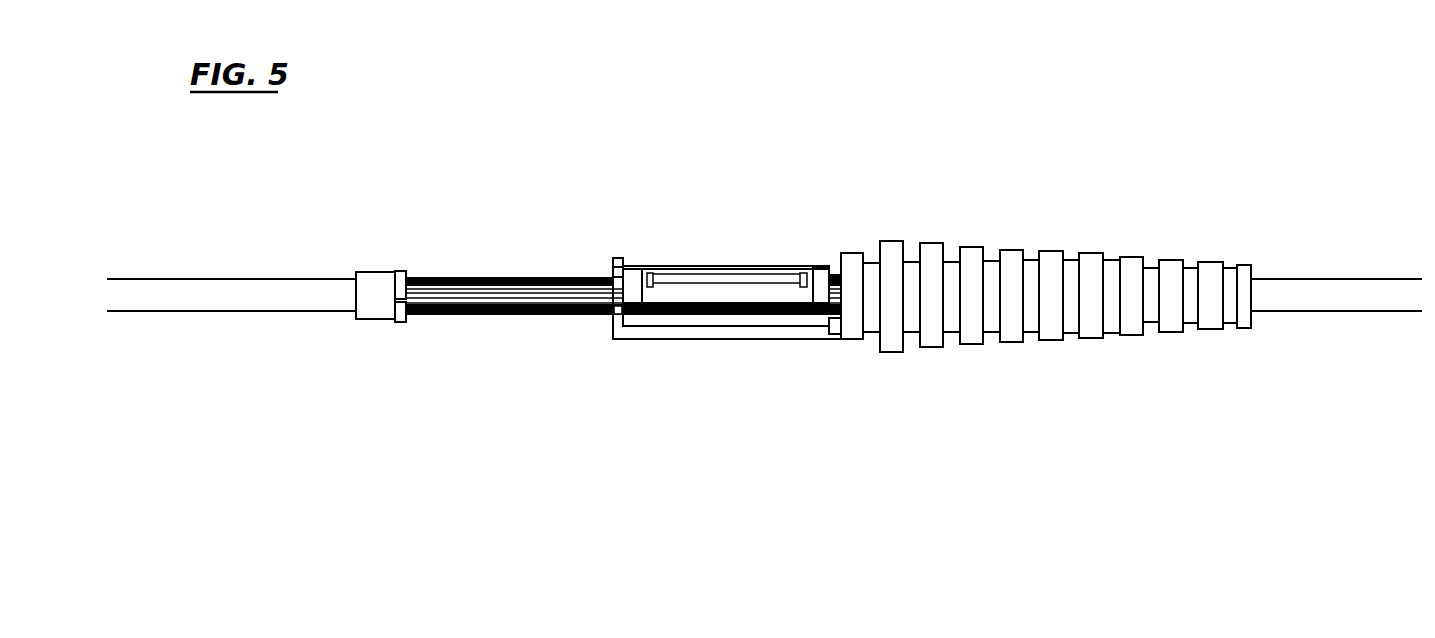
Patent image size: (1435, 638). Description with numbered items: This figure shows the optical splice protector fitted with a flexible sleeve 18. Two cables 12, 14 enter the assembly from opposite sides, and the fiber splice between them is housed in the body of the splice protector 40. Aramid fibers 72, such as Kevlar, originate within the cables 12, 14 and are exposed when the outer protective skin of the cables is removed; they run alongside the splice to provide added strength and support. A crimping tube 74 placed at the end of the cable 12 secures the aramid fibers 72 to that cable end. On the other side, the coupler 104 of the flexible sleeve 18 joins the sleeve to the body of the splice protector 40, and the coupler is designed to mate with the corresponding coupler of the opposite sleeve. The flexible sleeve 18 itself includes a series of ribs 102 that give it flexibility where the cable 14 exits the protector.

The cable 12 is at (224, 290).
The cable 14 is at (1358, 288).
The flexible sleeve 18 is at (1046, 304).
The body of the splice protector 40 is at (736, 252).
The aramid fibers 72 is at (561, 315).
The crimping tube 74 is at (383, 305).
The ribs 102 is at (1010, 338).
The coupler 104 is at (758, 338).